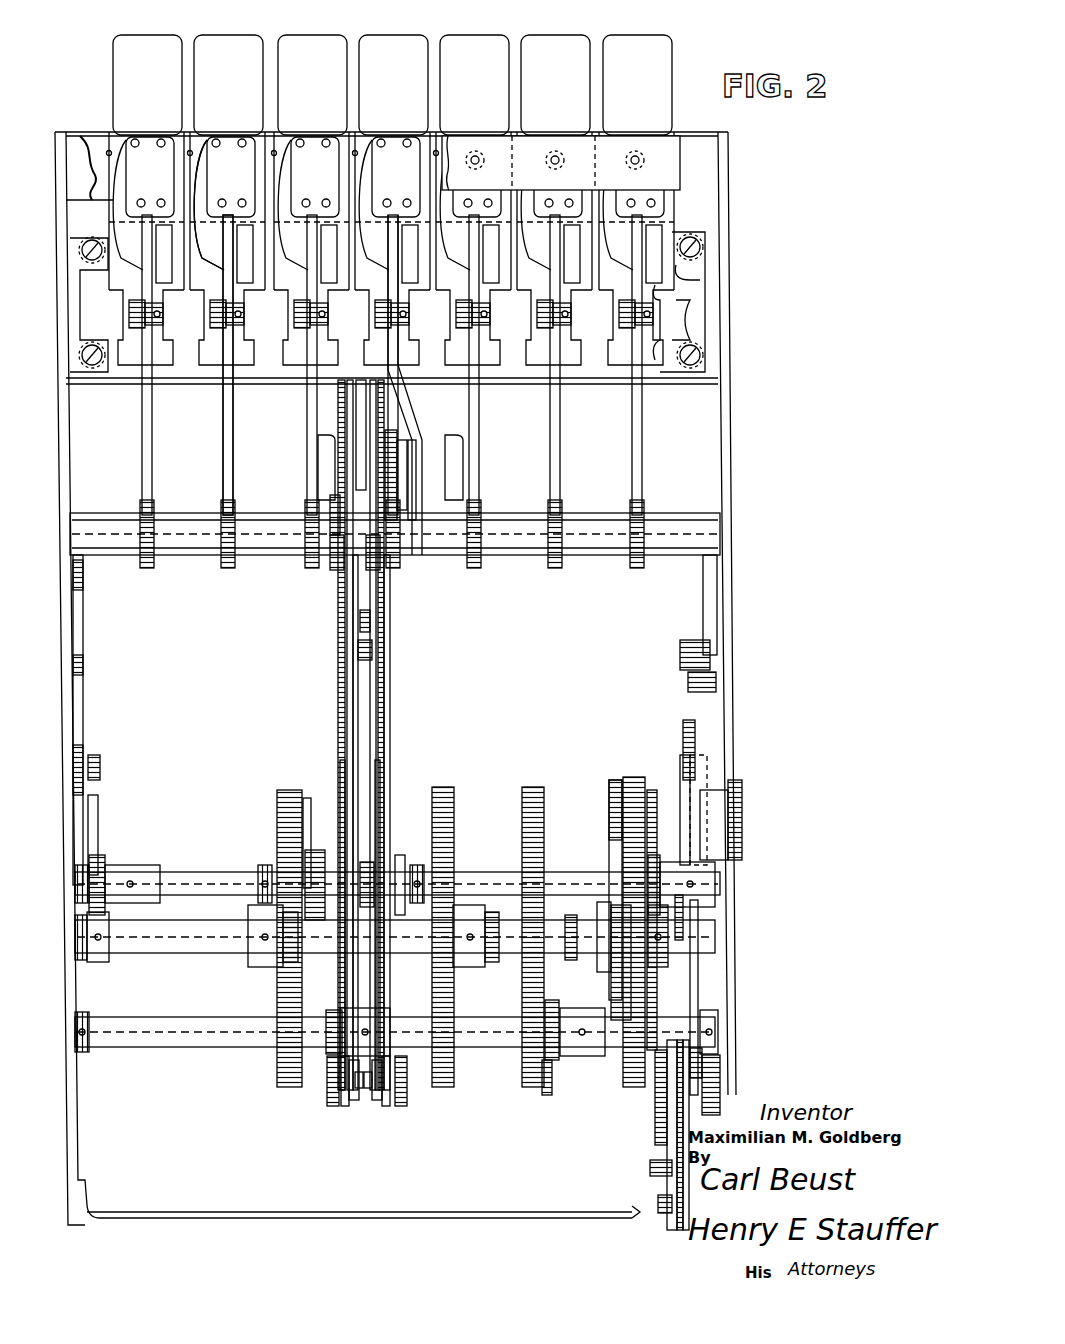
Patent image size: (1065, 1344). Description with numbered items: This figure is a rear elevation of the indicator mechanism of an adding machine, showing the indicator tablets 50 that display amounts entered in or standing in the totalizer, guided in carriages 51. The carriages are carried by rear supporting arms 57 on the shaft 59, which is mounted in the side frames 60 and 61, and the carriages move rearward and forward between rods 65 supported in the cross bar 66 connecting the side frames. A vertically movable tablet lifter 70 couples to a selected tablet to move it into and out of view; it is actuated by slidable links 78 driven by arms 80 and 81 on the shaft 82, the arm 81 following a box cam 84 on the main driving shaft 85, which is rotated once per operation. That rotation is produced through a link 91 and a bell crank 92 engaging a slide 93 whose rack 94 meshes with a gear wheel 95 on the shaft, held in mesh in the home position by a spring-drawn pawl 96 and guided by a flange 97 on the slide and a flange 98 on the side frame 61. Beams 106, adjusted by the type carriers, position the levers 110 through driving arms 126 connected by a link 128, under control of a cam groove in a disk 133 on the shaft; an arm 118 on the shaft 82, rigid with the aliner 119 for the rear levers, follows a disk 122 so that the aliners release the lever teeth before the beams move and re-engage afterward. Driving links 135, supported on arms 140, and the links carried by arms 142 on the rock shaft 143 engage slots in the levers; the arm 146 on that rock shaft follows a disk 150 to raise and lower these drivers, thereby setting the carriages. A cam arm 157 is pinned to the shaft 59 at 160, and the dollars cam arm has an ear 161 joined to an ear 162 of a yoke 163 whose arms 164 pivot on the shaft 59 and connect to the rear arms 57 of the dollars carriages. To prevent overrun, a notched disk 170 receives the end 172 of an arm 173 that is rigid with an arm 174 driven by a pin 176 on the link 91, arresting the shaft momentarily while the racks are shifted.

The indicator tablets 50 is at (660, 45).
The carriages 51 is at (665, 168).
The rear supporting arms 57 is at (228, 415).
The shaft 59 is at (720, 515).
The side frame 60 is at (45, 420).
The side frame 61 is at (728, 402).
The rods 65 is at (265, 152).
The cross bar 66 is at (82, 145).
The tablet lifter 70 is at (652, 372).
The slidable links 78 is at (83, 612).
The arm 80 is at (95, 818).
The arm 81 is at (670, 826).
The shaft 82 is at (210, 870).
The box cam 84 is at (645, 780).
The main driving shaft 85 is at (500, 950).
The link 91 is at (670, 1230).
The bell crank 92 is at (678, 1232).
The slide 93 is at (698, 990).
The rack 94 is at (700, 908).
The gear wheel 95 is at (679, 960).
The spring-drawn pawl 96 is at (683, 745).
The flange 97 is at (682, 768).
The flange 98 is at (712, 832).
The beams 106 is at (360, 620).
The levers 110 is at (338, 596).
The arm 118 is at (308, 808).
The aliner 119 is at (402, 855).
The disk 122 is at (288, 790).
The driving arms 126 is at (330, 550).
The link 128 is at (372, 622).
The disk 133 is at (445, 785).
The driving links 135 is at (340, 762).
The arms 140 is at (345, 1108).
The arms 142 is at (327, 1080).
The rock shaft 143 is at (472, 1040).
The arm 146 is at (552, 1072).
The disk 150 is at (532, 785).
The cam arm 157 is at (350, 610).
The pinning point 160 is at (330, 577).
The ear 161 is at (395, 428).
The ear 162 is at (396, 430).
The yoke 163 is at (450, 432).
The yoke arms 164 is at (318, 476).
The disk 170 is at (612, 968).
The end of arm 172 is at (612, 796).
The arm 173 is at (614, 850).
The arm 174 is at (655, 1120).
The driving pin 176 is at (650, 1180).